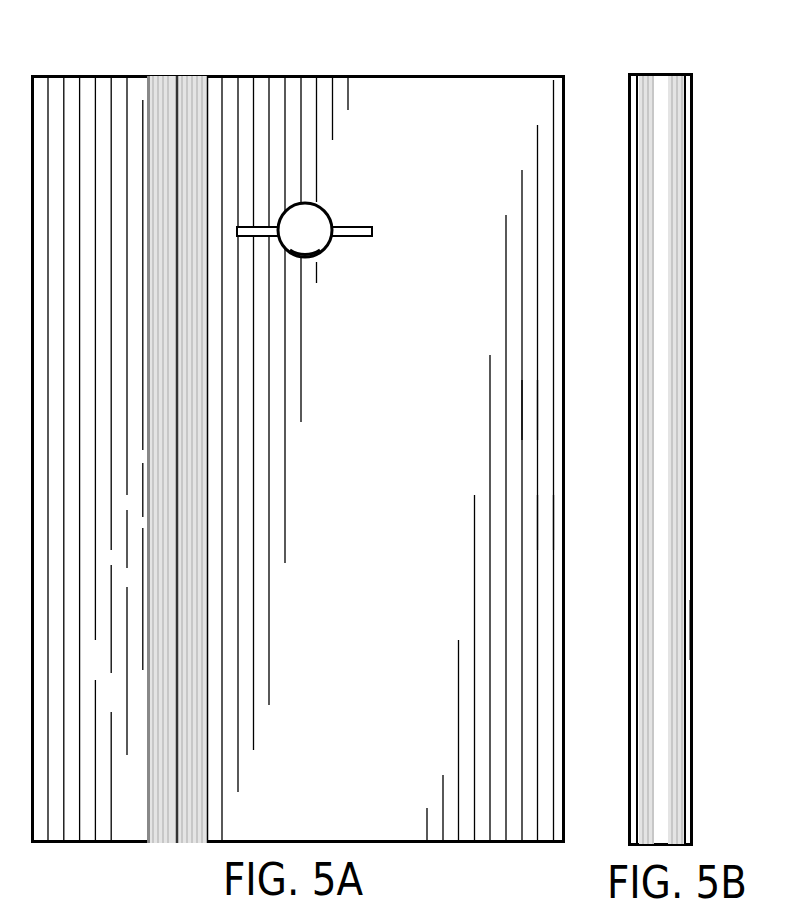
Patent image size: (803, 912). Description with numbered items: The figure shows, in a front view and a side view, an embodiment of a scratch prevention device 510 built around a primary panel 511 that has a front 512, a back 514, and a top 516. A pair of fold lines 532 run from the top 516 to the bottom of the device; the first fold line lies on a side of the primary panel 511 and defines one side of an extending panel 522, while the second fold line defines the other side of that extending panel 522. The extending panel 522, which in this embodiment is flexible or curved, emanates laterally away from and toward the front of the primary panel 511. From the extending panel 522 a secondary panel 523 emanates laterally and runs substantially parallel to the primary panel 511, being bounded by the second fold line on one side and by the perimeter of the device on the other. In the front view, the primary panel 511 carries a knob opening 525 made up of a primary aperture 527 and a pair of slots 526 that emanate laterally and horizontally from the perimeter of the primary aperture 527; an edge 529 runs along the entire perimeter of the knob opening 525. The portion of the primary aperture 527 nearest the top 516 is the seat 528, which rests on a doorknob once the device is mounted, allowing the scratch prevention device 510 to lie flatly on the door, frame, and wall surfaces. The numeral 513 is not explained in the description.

In FIG. 5A, the scratch prevention device 510 is at (372, 61).
In FIG. 5A, the primary panel 511 is at (537, 541).
In FIG. 5A, the front 512 is at (530, 430).
In FIG. 5A, the edge portion 513 is at (565, 800).
In FIG. 5A, the back 514 is at (399, 911).
In FIG. 5B, the back 514 is at (693, 633).
In FIG. 5B, the top 516 is at (656, 73).
In FIG. 5A, the extending panel 522 is at (178, 74).
In FIG. 5B, the extending panel 522 is at (676, 690).
In FIG. 5A, the secondary panel 523 is at (98, 836).
In FIG. 5B, the secondary panel 523 is at (692, 453).
In FIG. 5A, the knob opening 525 is at (331, 229).
In FIG. 5A, the slots 526 is at (262, 238).
In FIG. 5A, the primary aperture 527 is at (294, 222).
In FIG. 5A, the seat 528 is at (297, 203).
In FIG. 5A, the edge 529 is at (305, 260).
In FIG. 5A, the fold lines 532 is at (207, 845).